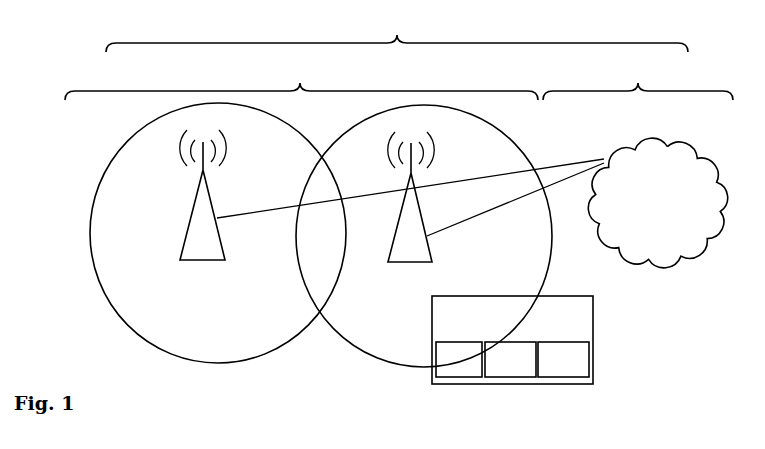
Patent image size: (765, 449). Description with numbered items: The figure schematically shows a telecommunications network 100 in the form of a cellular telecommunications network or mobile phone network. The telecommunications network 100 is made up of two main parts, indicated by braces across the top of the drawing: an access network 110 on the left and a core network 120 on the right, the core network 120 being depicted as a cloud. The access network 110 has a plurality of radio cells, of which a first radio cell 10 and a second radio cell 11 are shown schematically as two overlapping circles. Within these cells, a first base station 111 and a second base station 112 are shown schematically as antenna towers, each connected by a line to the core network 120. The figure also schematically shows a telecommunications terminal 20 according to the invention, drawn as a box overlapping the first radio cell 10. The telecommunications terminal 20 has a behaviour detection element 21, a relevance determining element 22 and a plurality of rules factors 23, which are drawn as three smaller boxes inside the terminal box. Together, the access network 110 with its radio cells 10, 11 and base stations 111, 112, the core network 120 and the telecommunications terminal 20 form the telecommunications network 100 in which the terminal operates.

The telecommunications network 100 is at (397, 35).
The access network 110 is at (301, 81).
The core network 120 is at (638, 165).
The second radio cell 11 is at (143, 341).
The first radio cell 10 is at (349, 342).
The second base station 112 is at (392, 195).
The first base station 111 is at (496, 197).
The telecommunications terminal 20 is at (512, 340).
The behaviour detection element 21 is at (459, 359).
The relevance determining element 22 is at (510, 359).
The rules factors 23 is at (563, 359).